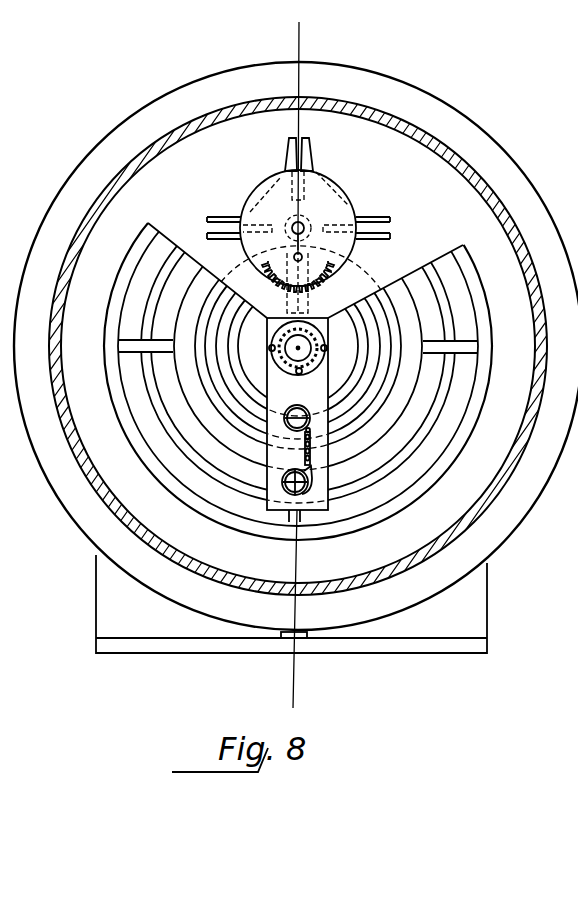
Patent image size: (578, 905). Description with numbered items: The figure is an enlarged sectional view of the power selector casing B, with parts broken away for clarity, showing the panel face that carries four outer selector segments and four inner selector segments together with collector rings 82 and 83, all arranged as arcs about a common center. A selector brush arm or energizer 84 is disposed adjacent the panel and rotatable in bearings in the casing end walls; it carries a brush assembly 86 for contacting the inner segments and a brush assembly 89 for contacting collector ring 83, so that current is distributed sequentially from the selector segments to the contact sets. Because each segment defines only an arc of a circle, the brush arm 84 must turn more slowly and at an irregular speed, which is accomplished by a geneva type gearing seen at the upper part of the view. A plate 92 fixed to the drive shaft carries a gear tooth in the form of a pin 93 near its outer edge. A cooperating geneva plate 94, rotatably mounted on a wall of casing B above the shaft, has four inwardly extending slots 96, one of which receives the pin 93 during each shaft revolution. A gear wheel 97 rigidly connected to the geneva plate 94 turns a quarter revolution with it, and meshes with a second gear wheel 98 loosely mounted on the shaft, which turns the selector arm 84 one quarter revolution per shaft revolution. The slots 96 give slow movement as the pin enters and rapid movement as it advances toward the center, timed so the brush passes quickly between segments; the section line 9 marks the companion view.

The section line 9- 9 is at (370, 41).
The power selector casing B is at (527, 192).
The collector ring 82 is at (386, 392).
The collector ring 83 is at (367, 380).
The selector brush arm 84 is at (311, 512).
The brush assembly 86 is at (289, 512).
The brush assembly 89 is at (289, 407).
The plate 92 is at (343, 282).
The pin 93 is at (294, 255).
The geneva plate 94 is at (312, 158).
The slots 96 is at (298, 127).
The gear wheel 97 is at (347, 192).
The second gear wheel 98 is at (347, 306).